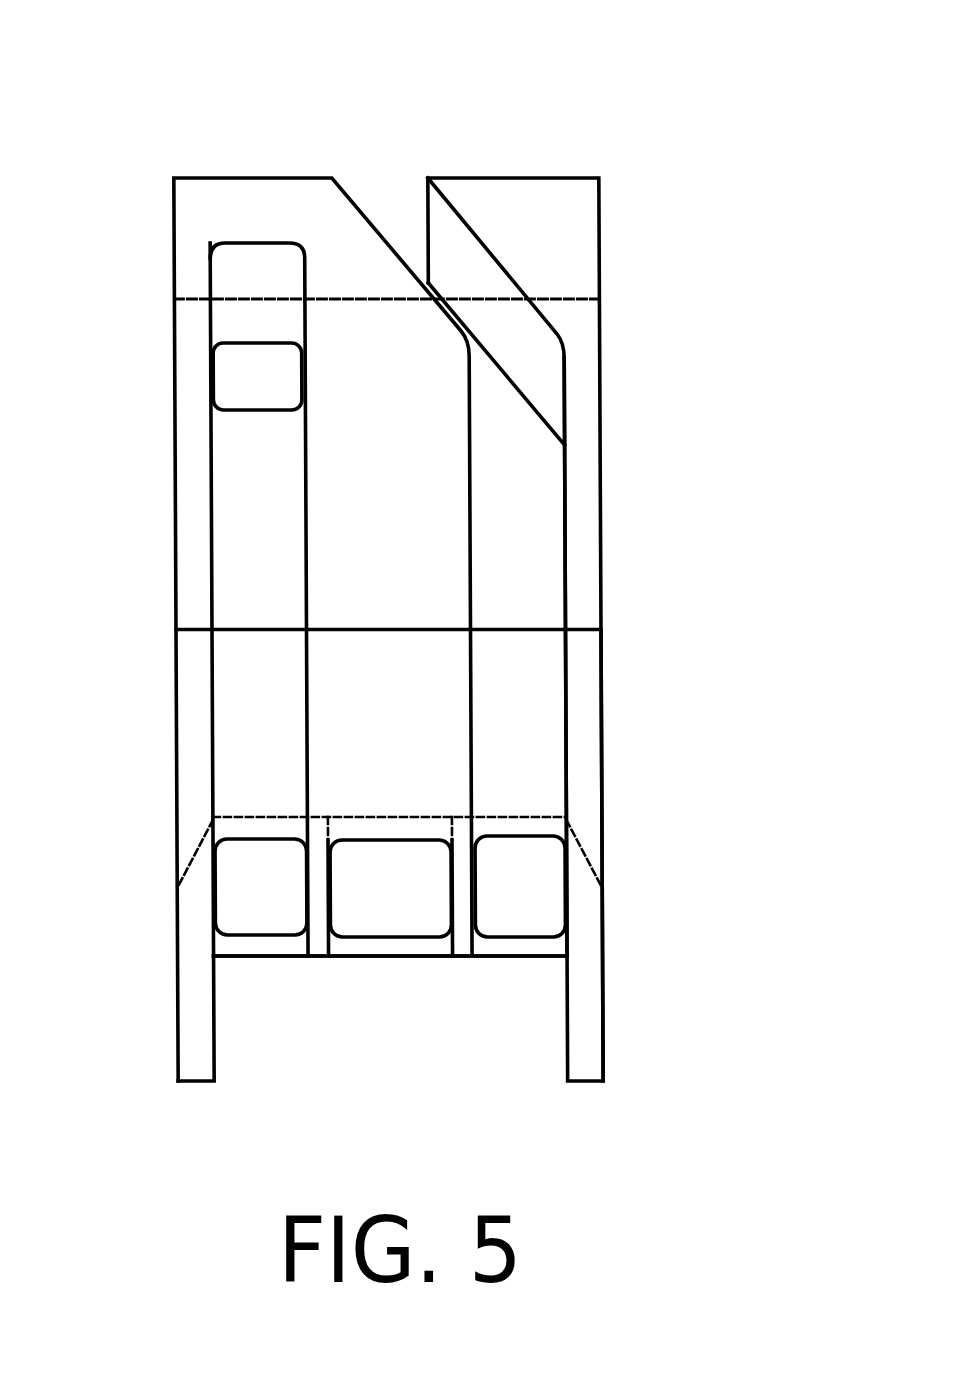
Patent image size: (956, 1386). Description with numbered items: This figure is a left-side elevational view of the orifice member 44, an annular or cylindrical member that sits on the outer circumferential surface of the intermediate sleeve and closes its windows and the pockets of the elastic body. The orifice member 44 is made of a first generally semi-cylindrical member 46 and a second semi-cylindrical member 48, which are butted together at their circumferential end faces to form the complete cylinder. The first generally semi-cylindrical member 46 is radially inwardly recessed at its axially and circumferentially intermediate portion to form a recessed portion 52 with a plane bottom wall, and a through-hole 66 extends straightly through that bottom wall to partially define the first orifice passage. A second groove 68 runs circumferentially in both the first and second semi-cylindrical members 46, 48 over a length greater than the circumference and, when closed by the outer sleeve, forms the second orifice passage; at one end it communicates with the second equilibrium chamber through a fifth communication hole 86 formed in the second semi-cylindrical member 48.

The orifice member 44 is at (563, 111).
The first generally semi-cylindrical member 46 is at (588, 763).
The second semi-cylindrical member 48 is at (565, 245).
The recessed portion 52 is at (493, 957).
The through-hole 66 is at (330, 887).
The second groove 68 is at (568, 503).
The fifth communication hole 86 is at (257, 408).